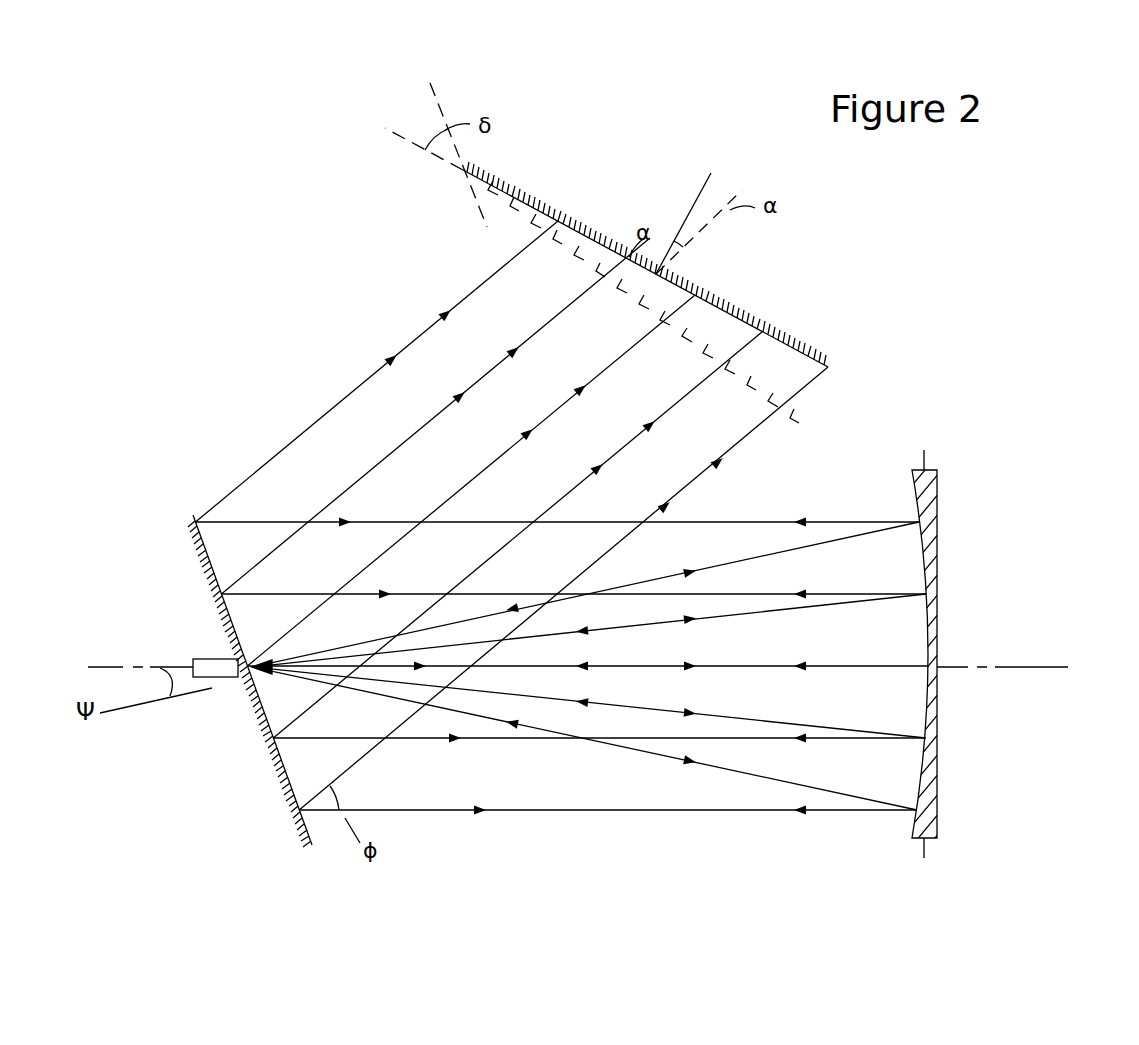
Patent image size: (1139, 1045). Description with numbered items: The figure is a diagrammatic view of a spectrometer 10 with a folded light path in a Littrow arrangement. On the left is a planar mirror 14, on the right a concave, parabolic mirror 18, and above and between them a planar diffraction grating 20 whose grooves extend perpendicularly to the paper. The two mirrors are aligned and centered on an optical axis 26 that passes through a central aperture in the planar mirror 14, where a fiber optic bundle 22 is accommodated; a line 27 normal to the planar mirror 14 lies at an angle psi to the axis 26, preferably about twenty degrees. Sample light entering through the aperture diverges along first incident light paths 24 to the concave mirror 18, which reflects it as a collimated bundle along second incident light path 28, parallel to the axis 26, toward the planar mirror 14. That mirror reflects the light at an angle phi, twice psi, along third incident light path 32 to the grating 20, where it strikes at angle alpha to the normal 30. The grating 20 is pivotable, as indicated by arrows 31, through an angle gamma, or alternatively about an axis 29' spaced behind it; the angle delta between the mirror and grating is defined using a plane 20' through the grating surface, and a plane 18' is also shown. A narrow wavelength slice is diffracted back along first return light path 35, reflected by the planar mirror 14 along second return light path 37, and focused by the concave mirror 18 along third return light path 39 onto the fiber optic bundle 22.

The spectrometer 10 is at (156, 368).
The planar mirror 14 is at (190, 518).
The concave parabolic mirror 18 is at (958, 660).
The second mirror normal (tilted) 18' is at (469, 148).
The diffraction grating 20 is at (689, 295).
The plane passing through the optical surface of grating 20' is at (402, 128).
The fiber optic bundle 22 is at (215, 658).
The first incident light paths 24 is at (692, 569).
The optical axis 26 is at (128, 665).
The line normal to the plane of mirror 27 is at (167, 703).
The second incident light path 28 is at (796, 519).
The axis 29' is at (673, 194).
The normal 30 is at (710, 172).
The arrows 31 is at (598, 248).
The third incident light path 32 is at (444, 316).
The first return light path 35 is at (389, 363).
The second return light path 37 is at (346, 518).
The third return light path 39 is at (514, 605).